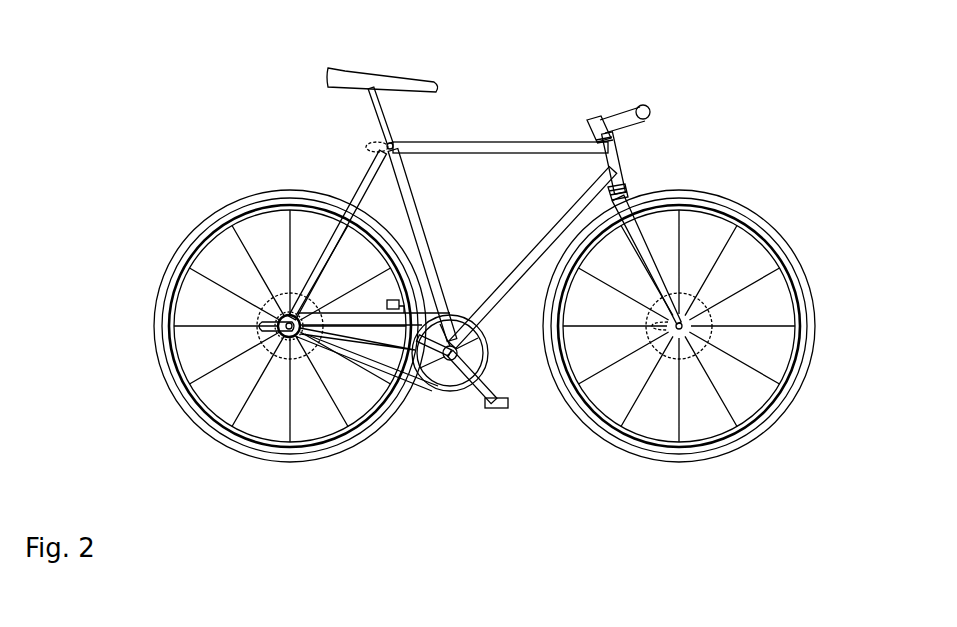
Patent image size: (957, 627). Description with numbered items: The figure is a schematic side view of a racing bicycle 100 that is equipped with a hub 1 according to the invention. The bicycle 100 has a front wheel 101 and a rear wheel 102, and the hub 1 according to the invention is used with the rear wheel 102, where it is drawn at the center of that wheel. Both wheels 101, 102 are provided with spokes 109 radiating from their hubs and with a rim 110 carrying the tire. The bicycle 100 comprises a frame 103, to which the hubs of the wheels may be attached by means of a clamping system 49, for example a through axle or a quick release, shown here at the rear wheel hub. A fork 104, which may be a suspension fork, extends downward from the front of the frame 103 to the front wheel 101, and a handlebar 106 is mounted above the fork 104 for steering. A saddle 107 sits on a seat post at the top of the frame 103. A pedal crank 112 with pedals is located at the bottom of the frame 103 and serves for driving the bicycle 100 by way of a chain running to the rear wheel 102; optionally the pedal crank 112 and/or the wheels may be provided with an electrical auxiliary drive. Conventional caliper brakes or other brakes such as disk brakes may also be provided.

The racing bicycle 100 is at (194, 104).
The hub 1 is at (300, 368).
The clamping system 49 is at (280, 330).
The front wheel 101 is at (783, 238).
The rear wheel 102 is at (187, 247).
The frame 103 is at (502, 145).
The fork 104 is at (637, 237).
The handlebar 106 is at (622, 117).
The saddle 107 is at (366, 68).
The spokes 109 is at (777, 330).
The rim 110 is at (787, 367).
The pedal crank 112 is at (464, 294).